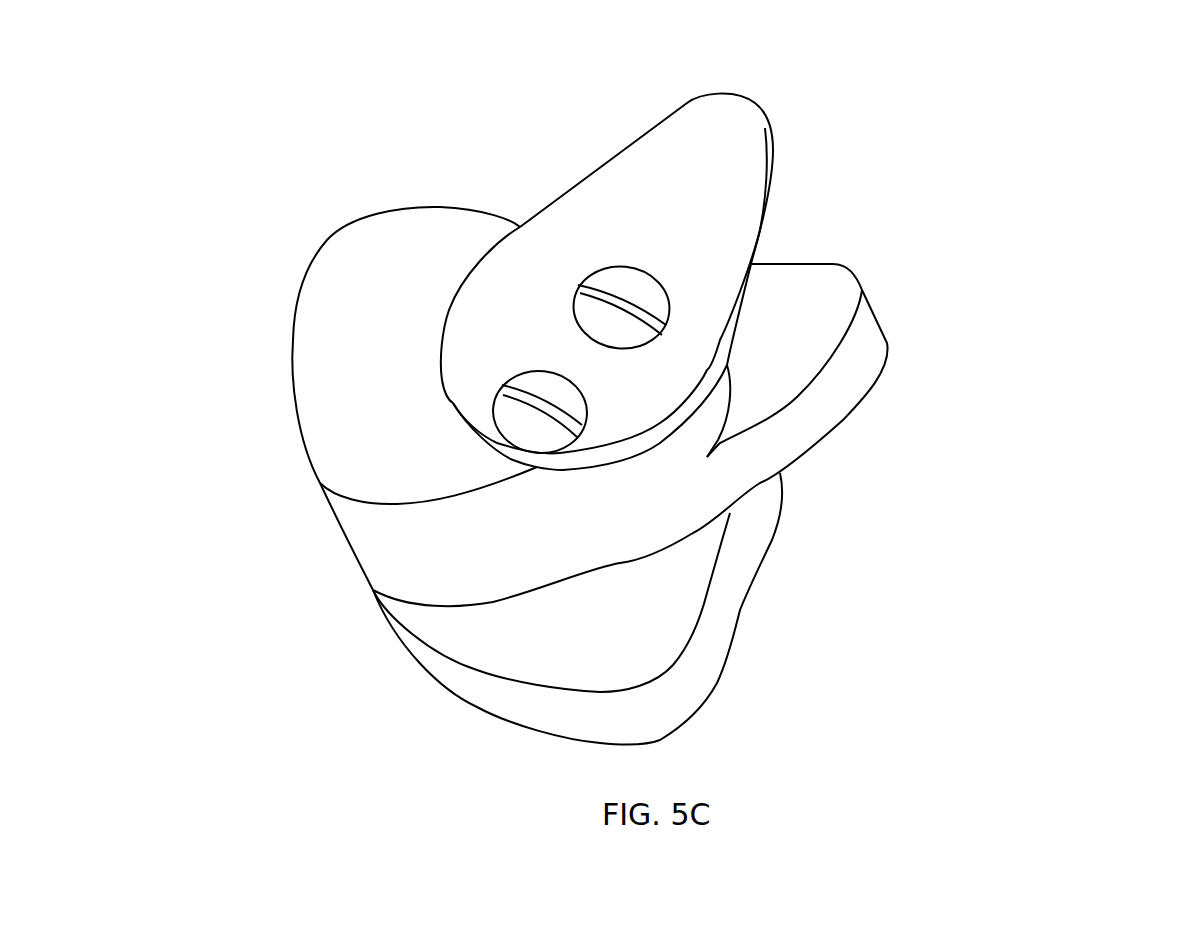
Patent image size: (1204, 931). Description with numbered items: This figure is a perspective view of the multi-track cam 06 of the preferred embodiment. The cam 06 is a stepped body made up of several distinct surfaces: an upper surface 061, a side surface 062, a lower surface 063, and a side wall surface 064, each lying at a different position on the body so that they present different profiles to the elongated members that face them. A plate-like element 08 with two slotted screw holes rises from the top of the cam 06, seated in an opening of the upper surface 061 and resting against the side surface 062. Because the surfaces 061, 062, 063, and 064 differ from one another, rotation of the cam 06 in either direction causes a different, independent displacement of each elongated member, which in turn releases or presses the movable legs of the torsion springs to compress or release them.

The cam 06 is at (1068, 107).
The cam surface 061 is at (327, 240).
The cam surface 062 is at (882, 312).
The cam surface 063 is at (685, 705).
The cam surface 064 is at (363, 568).
The mounting flap 08 is at (742, 178).